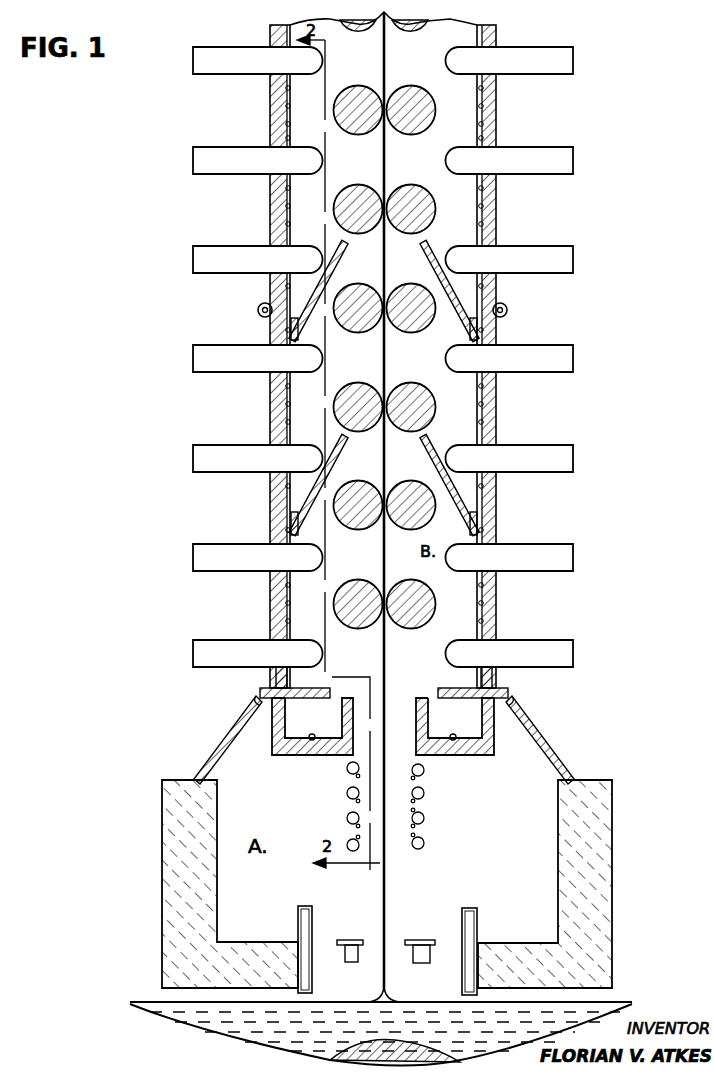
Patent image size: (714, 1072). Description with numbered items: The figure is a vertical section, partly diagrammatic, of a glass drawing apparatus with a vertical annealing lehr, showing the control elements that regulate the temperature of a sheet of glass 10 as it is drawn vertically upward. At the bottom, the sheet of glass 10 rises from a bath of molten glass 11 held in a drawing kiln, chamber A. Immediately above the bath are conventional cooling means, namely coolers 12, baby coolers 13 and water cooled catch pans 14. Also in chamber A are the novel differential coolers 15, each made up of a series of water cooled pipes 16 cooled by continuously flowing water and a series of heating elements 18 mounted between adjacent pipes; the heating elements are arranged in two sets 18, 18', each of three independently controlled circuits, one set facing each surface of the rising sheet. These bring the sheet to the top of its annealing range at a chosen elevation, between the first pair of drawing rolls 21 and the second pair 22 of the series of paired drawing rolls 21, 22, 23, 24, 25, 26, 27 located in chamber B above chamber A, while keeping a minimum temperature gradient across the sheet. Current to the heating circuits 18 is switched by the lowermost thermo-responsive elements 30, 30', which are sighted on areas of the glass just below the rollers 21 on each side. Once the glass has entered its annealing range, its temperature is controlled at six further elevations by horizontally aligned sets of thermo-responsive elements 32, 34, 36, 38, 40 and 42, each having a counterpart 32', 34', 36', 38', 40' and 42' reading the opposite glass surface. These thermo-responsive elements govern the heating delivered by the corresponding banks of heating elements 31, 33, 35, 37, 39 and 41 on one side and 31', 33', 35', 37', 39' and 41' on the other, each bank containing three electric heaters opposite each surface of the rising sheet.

The sheet of glass 10 is at (384, 893).
The bath of molten glass 11 is at (381, 1034).
The coolers 12 is at (477, 916).
The baby coolers 13 is at (360, 955).
The water cooled catch pans 14 is at (273, 756).
The differential coolers 15 is at (425, 810).
The water cooled pipes 16 is at (424, 843).
The heating elements 18 is at (440, 783).
The heating elements 18' is at (341, 806).
The first pair of drawing rolls 21 is at (404, 628).
The second pair of drawing rolls 22 is at (404, 528).
The pair of drawing rolls 23 is at (404, 431).
The pair of drawing rolls 24 is at (404, 332).
The pair of drawing rolls 25 is at (404, 233).
The pair of drawing rolls 26 is at (404, 134).
The pair of drawing rolls 27 is at (398, 33).
The thermo-responsive elements 30 is at (532, 665).
The thermo-responsive elements 30' is at (236, 665).
The bank of heating elements 31 is at (517, 605).
The bank of heating elements 31' is at (252, 605).
The thermo-responsive elements 32 is at (532, 568).
The thermo-responsive elements 32' is at (236, 568).
The bank of heating elements 33 is at (514, 508).
The bank of heating elements 33' is at (255, 508).
The thermo-responsive elements 34 is at (532, 469).
The thermo-responsive elements 34' is at (235, 468).
The bank of heating elements 35 is at (514, 408).
The bank of heating elements 35' is at (252, 408).
The thermo-responsive elements 36 is at (532, 369).
The thermo-responsive elements 36' is at (235, 369).
The bank of heating elements 37 is at (528, 310).
The bank of heating elements 37' is at (242, 310).
The thermo-responsive elements 38 is at (532, 270).
The thermo-responsive elements 38' is at (235, 270).
The bank of heating elements 39 is at (513, 210).
The bank of heating elements 39' is at (253, 210).
The thermo-responsive elements 40 is at (531, 171).
The thermo-responsive elements 40' is at (234, 171).
The bank of heating elements 41 is at (512, 356).
The bank of heating elements 41' is at (259, 356).
The thermo-responsive elements 42 is at (530, 71).
The thermo-responsive elements 42' is at (237, 69).